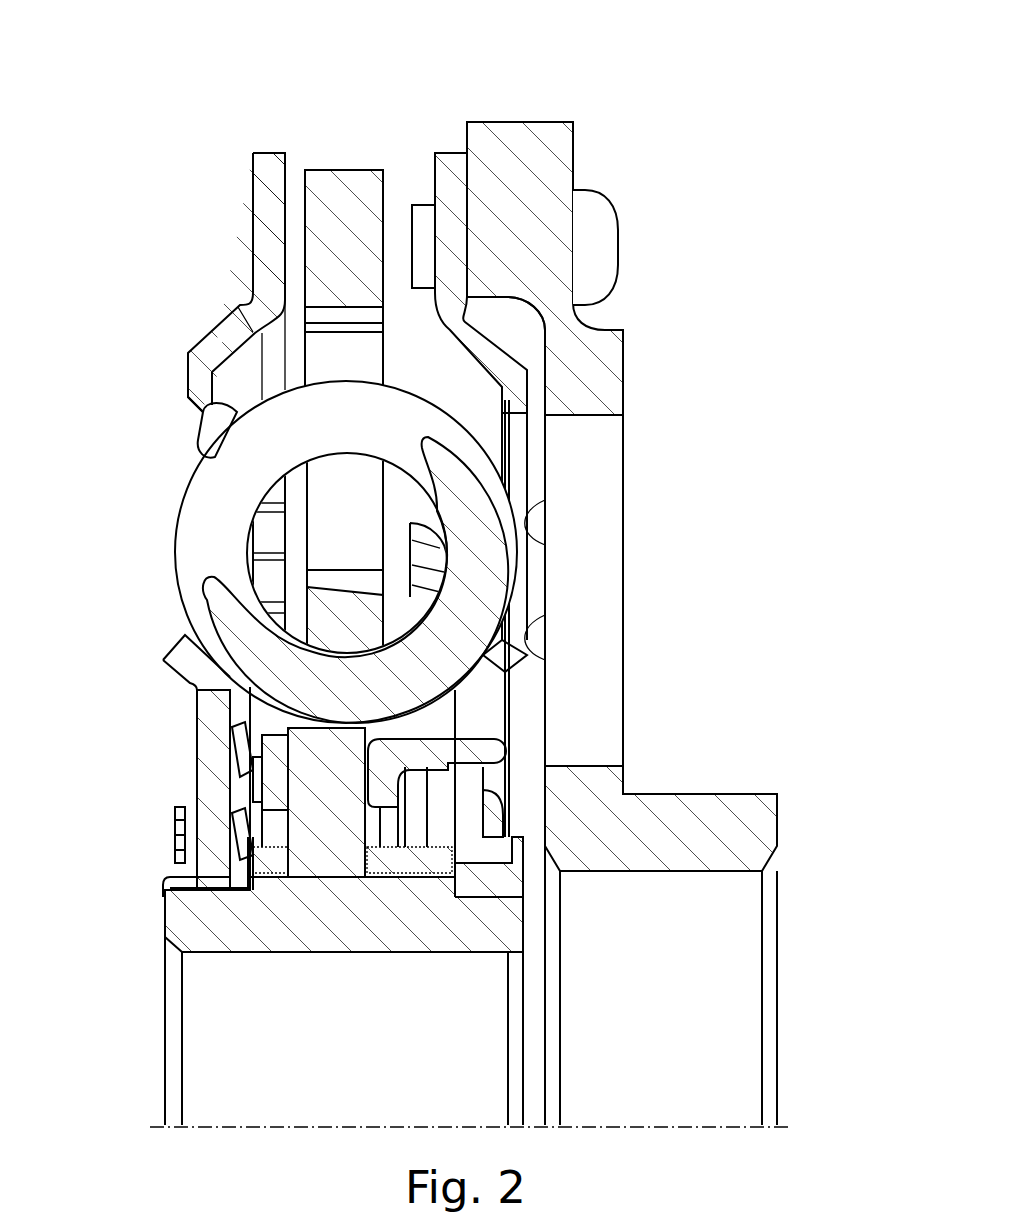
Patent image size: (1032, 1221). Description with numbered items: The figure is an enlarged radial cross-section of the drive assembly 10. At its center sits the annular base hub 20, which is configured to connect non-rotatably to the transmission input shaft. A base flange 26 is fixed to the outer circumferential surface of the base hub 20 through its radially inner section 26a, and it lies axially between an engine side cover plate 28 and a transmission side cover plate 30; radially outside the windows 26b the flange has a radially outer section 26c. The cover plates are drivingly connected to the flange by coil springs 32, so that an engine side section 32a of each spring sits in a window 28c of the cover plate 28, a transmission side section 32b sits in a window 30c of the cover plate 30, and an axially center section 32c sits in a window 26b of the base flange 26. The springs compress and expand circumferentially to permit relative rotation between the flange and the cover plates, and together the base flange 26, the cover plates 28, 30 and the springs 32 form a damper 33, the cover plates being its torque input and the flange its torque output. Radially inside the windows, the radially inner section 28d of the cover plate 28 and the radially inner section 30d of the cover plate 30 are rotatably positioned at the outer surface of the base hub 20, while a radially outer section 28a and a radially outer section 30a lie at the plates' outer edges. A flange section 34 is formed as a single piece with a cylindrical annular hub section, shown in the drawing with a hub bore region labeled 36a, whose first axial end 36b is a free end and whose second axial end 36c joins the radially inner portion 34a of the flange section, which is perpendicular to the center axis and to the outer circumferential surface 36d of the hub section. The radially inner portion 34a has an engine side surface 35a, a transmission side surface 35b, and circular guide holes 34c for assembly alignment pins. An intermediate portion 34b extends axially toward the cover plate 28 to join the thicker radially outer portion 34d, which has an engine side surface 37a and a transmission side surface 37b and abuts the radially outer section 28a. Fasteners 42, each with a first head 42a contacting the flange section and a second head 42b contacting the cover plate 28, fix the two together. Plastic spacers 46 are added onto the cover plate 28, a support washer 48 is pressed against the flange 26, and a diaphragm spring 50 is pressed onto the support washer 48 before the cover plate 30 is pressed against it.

The drive assembly 10 is at (792, 92).
The base hub 20 is at (215, 905).
The base flange 26 is at (256, 224).
The radially inner section 26a is at (322, 858).
The windows 26b is at (328, 300).
The radially outer section 26c is at (367, 180).
The engine side cover plate 28 is at (578, 351).
The radially outer section 28a is at (460, 160).
The windows 28c is at (537, 413).
The radially inner section 28d is at (468, 830).
The transmission side cover plate 30 is at (186, 238).
The radially outer section 30a is at (263, 192).
The windows 30c is at (185, 418).
The radially inner section 30d is at (210, 797).
The coil springs 32 is at (393, 527).
The engine side section 32a is at (520, 595).
The transmission side section 32b is at (205, 542).
The axially center section 32c is at (315, 422).
The damper 33 is at (185, 132).
The flange section 34 is at (651, 600).
The radially inner portion 34a is at (605, 662).
The intermediate portion 34b is at (572, 327).
The guide holes 34c is at (612, 408).
The radially outer portion 34d is at (548, 132).
The engine side surface 35a is at (609, 487).
The transmission side surface 35b is at (545, 540).
The hub bore 36a is at (653, 882).
The first axial end 36b is at (800, 828).
The second axial end 36c is at (526, 842).
The outer circumferential surface 36d is at (745, 794).
The engine side surface 37a is at (555, 165).
The transmission side surface 37b is at (455, 182).
The fasteners 42 is at (603, 135).
The first head 42a is at (605, 248).
The second head 42b is at (425, 227).
The plastic spacers 46 is at (403, 757).
The support washer 48 is at (268, 784).
The diaphragm spring 50 is at (232, 730).